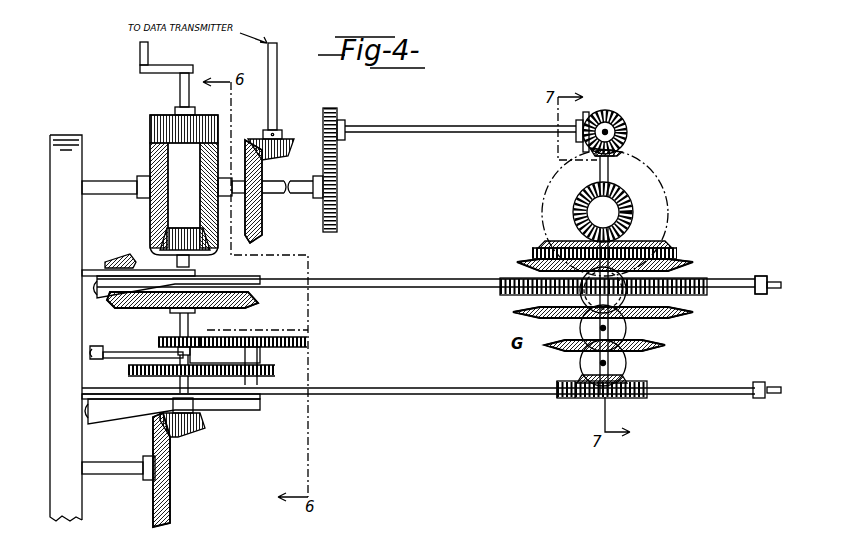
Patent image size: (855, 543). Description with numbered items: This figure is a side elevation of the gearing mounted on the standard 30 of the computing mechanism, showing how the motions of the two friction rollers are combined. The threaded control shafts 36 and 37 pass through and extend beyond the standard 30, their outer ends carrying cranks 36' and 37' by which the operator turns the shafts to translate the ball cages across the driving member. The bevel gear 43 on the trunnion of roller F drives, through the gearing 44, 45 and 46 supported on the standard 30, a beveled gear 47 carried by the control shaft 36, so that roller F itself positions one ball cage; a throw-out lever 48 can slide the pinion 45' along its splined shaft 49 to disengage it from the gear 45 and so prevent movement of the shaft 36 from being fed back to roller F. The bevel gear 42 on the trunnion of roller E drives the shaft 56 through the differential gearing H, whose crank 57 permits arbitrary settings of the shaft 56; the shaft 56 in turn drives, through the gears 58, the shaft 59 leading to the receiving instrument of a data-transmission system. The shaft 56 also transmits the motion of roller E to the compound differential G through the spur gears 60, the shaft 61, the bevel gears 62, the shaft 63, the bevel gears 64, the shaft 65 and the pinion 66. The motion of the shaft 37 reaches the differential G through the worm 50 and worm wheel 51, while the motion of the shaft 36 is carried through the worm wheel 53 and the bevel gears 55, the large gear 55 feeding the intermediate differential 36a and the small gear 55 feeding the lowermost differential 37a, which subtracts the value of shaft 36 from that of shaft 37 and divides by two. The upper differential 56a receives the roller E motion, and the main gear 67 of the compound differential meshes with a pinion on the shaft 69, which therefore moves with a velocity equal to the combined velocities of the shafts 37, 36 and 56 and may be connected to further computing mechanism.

The standard 30 is at (50, 348).
The beveled gear 42 is at (152, 132).
The beveled gear 43 is at (165, 511).
The gearing 44 is at (266, 371).
The gear 45 is at (271, 334).
The pinion 45' is at (168, 331).
The gearing 46 is at (243, 298).
The beveled gear 47 is at (125, 247).
The throw-out lever 48 is at (98, 352).
The splined shaft 49 is at (190, 329).
The worm 50 is at (611, 398).
The worm wheel 51 is at (564, 398).
The worm wheel 53 is at (653, 218).
The bevel gears 55 is at (636, 201).
The shaft 56 is at (306, 190).
The upper differential 56a is at (560, 270).
The crank 57 is at (177, 68).
The gears 58 is at (283, 153).
The shaft 59 is at (278, 113).
The spur gears 60 is at (337, 211).
The shaft 61 is at (444, 133).
The bevel gears 62 is at (591, 112).
The shaft 63 is at (621, 128).
The bevel gears 64 is at (626, 137).
The shaft 65 is at (619, 153).
The pinion 66 is at (678, 255).
The main gear 67 is at (507, 296).
The shaft 69 is at (623, 276).
The threaded control shaft 36 is at (431, 279).
The crank 36' is at (766, 298).
The intermediate differential 36a is at (619, 329).
The threaded control shaft 37 is at (431, 394).
The crank 37' is at (757, 404).
The lowermost differential 37a is at (619, 364).